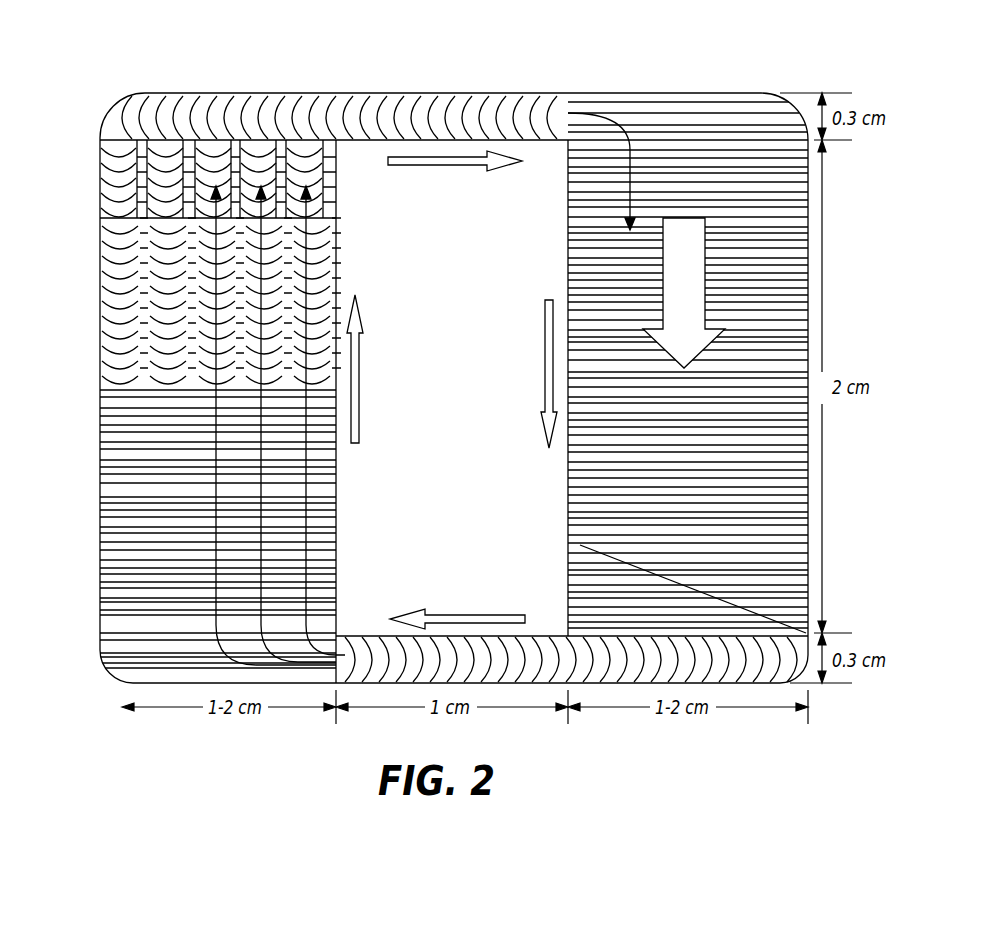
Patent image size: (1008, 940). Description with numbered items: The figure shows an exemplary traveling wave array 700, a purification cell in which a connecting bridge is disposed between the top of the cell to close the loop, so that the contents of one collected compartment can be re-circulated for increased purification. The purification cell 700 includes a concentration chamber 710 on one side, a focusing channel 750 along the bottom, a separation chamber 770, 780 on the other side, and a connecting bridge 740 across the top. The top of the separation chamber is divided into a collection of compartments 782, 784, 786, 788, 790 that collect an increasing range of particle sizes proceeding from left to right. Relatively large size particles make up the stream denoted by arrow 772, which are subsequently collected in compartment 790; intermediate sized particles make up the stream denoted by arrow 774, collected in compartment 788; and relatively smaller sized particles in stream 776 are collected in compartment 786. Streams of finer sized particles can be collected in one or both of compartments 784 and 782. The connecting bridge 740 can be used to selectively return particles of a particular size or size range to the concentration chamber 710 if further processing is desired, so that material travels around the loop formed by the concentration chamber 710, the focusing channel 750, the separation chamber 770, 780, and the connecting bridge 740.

The traveling wave array 700 is at (696, 63).
The concentration chamber 710 is at (790, 428).
The connecting bridge 740 is at (412, 110).
The focusing channel 750 is at (580, 660).
The separation chamber 770 is at (132, 488).
The stream of relatively large size particles 772 is at (310, 558).
The stream of intermediate sized particles 774 is at (263, 540).
The stream of relatively smaller sized particles 776 is at (218, 510).
The separation chamber 780 is at (158, 270).
The compartment 782 is at (192, 130).
The compartment 784 is at (167, 147).
The compartment 786 is at (216, 148).
The compartment 788 is at (253, 147).
The compartment 790 is at (306, 147).